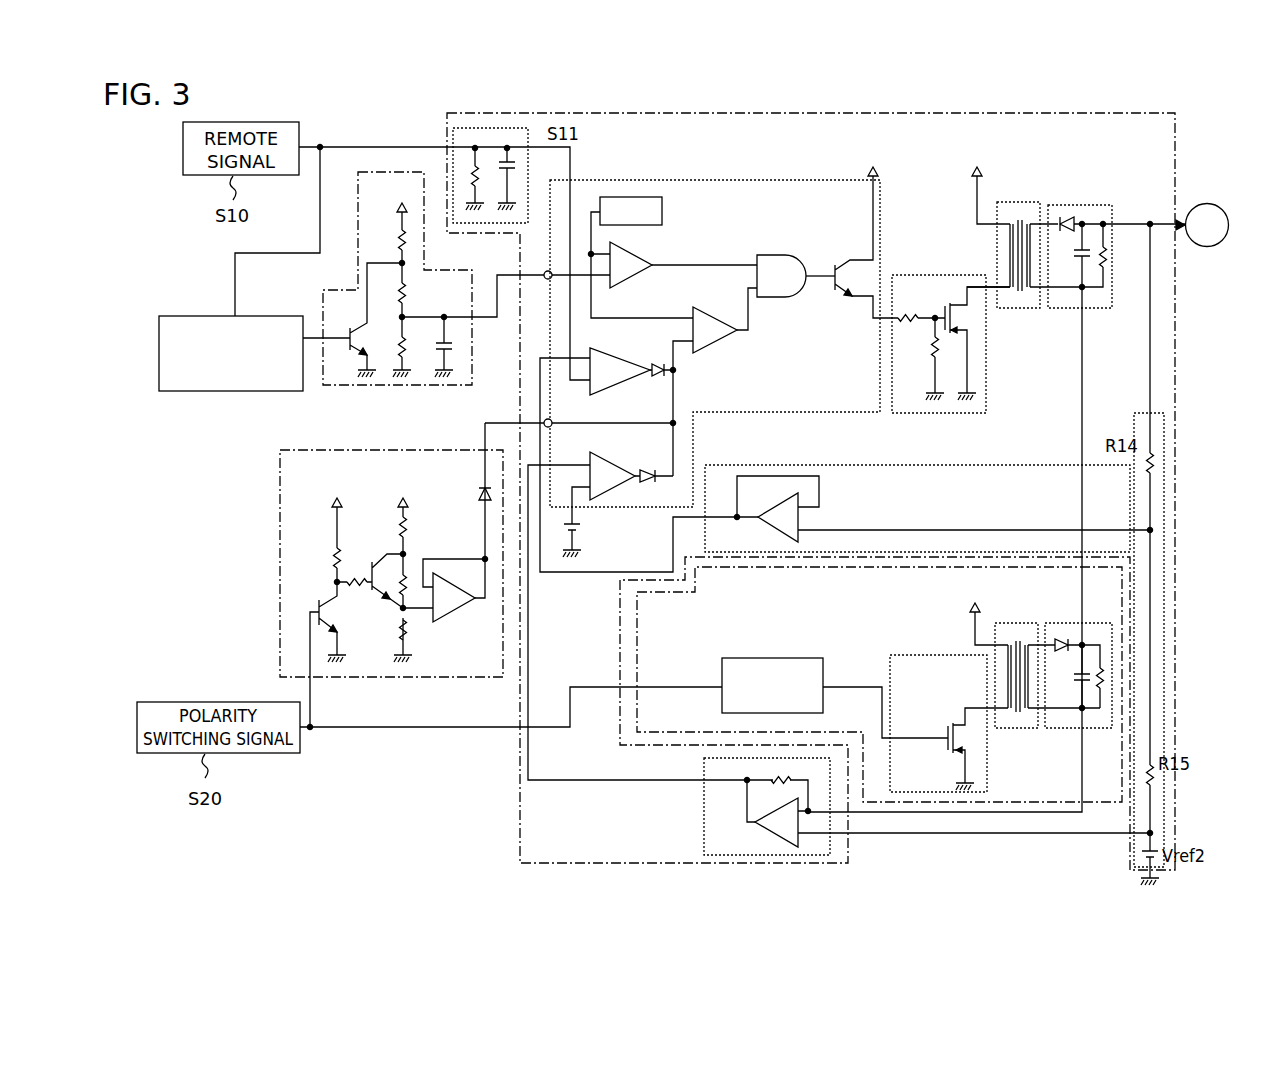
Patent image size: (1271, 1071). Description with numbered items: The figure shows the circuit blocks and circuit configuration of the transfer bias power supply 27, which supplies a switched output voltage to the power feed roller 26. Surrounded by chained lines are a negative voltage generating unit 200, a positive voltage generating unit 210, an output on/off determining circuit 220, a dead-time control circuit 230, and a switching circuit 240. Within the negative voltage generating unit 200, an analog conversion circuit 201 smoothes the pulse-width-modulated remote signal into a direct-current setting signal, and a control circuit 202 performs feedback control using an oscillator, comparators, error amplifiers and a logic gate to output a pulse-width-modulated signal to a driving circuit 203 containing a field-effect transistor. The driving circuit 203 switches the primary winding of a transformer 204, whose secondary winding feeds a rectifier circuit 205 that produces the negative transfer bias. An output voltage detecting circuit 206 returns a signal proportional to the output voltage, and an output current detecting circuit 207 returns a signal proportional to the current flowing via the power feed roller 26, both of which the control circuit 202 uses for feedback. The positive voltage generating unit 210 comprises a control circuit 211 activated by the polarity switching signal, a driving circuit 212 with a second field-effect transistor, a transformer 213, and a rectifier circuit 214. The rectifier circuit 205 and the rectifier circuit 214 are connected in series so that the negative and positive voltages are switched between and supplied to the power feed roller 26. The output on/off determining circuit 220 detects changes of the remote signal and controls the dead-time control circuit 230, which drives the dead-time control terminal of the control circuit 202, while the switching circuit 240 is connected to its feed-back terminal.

The power feed roller 26 is at (1207, 247).
The transfer bias power supply 27 is at (1203, 162).
The negative voltage generating unit 200 is at (1177, 382).
The analog conversion circuit 201 is at (453, 142).
The control circuit 202 is at (737, 180).
The driving circuit 203 is at (941, 413).
The transformer 204 is at (1012, 202).
The rectifier circuit 205 is at (1079, 205).
The output voltage detecting circuit 206 is at (1000, 465).
The output current detecting circuit 207 is at (704, 802).
The positive voltage generating unit 210 is at (1091, 805).
The control circuit 211 is at (782, 658).
The driving circuit 212 is at (918, 655).
The transformer 213 is at (1026, 623).
The rectifier circuit 214 is at (1089, 623).
The output on/off determining circuit 220 is at (259, 316).
The dead-time control circuit 230 is at (424, 254).
The switching circuit 240 is at (280, 485).